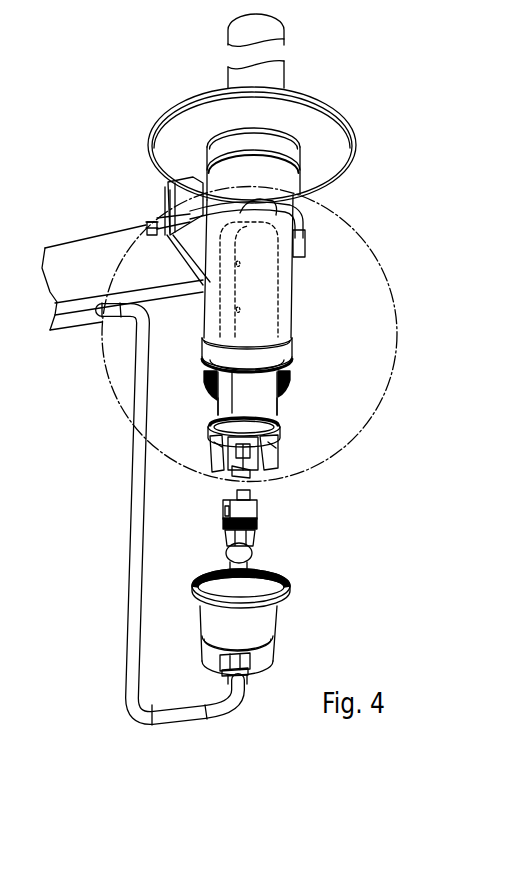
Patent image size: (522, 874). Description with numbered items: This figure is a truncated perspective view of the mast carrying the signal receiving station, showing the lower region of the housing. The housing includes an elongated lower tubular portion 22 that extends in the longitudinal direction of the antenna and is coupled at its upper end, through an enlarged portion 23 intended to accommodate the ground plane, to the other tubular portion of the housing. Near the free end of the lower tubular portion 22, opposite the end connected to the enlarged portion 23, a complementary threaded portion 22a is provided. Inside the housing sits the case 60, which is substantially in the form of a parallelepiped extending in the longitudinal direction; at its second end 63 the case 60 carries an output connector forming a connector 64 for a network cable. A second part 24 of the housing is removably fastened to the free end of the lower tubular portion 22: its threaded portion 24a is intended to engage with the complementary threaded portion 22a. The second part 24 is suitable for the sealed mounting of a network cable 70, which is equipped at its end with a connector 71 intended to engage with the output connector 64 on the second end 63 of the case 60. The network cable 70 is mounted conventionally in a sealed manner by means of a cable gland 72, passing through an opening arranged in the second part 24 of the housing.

The lower tubular portion 22 is at (283, 295).
The complementary threaded portion 22a is at (208, 407).
The enlarged portion 23 is at (337, 137).
The second part 24 is at (262, 628).
The threaded portion 24a is at (267, 580).
The case 60 is at (265, 412).
The second end 63 is at (257, 453).
The output connector 64 is at (233, 467).
The network cable 70 is at (132, 638).
The connector 71 is at (252, 505).
The cable gland 72 is at (252, 665).